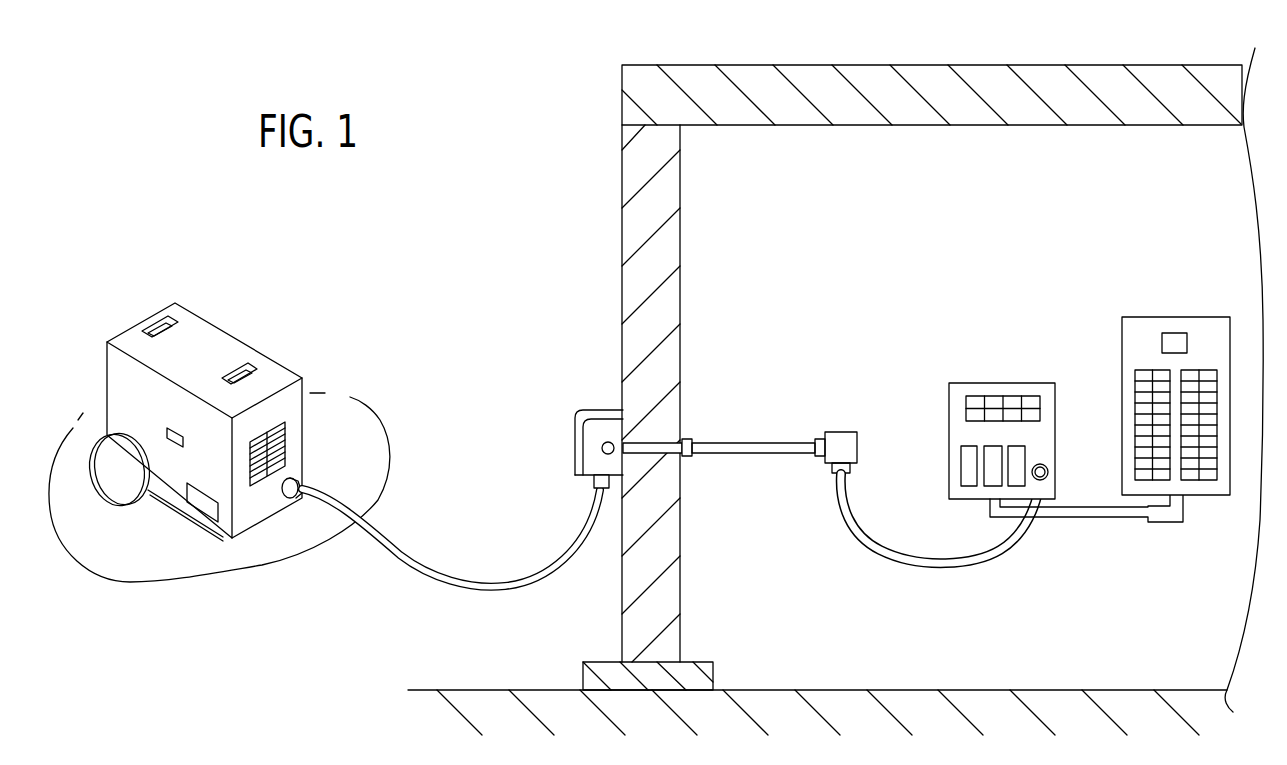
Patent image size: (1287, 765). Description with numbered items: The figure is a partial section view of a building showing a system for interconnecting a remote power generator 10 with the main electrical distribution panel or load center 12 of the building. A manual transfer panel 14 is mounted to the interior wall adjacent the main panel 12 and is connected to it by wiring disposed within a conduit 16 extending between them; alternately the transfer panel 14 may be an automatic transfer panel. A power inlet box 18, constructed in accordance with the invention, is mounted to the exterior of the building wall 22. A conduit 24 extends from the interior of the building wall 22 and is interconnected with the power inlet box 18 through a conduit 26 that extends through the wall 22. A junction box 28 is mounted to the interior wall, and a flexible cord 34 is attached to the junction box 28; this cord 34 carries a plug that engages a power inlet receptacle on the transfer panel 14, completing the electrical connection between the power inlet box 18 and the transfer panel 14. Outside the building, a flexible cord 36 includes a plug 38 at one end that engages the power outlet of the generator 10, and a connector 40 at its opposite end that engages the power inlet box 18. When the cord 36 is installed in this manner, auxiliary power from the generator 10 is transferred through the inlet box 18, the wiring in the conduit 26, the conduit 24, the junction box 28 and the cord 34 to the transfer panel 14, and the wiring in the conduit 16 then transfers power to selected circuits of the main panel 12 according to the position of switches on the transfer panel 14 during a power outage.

The remote power generator 10 is at (269, 311).
The main electrical distribution panel 12 is at (1207, 507).
The manual transfer panel 14 is at (997, 371).
The conduit 16 is at (1077, 518).
The power inlet box 18 is at (568, 394).
The building wall 22 is at (621, 589).
The conduit 24 is at (752, 442).
The conduit 26 is at (653, 440).
The junction box 28 is at (840, 432).
The flexible cord 34 is at (963, 568).
The flexible cord 36 is at (437, 572).
The plug 38 is at (283, 504).
The connector 40 is at (594, 484).